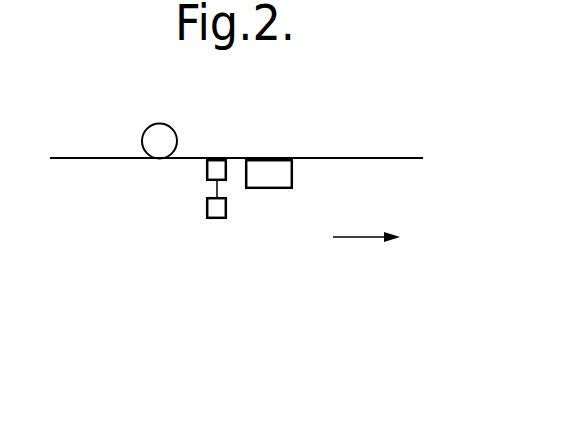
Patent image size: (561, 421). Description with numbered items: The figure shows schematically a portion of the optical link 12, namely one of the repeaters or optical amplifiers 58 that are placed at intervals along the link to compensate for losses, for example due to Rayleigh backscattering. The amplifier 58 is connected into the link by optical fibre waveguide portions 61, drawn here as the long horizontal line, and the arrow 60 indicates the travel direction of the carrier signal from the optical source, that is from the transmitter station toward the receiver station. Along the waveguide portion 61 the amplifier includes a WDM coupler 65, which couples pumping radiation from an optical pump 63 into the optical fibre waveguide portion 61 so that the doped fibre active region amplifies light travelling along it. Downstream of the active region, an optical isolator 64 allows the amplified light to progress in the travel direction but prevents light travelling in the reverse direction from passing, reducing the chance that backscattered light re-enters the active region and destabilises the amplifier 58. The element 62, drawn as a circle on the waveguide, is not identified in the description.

The optical link 12 is at (180, 208).
The optical amplifier 58 is at (235, 238).
The arrow 60 is at (355, 239).
The optical fibre waveguide portion 61 is at (347, 158).
The roller 62 is at (147, 128).
The optical pump 63 is at (217, 220).
The optical isolator 64 is at (268, 177).
The WDM coupler 65 is at (208, 170).